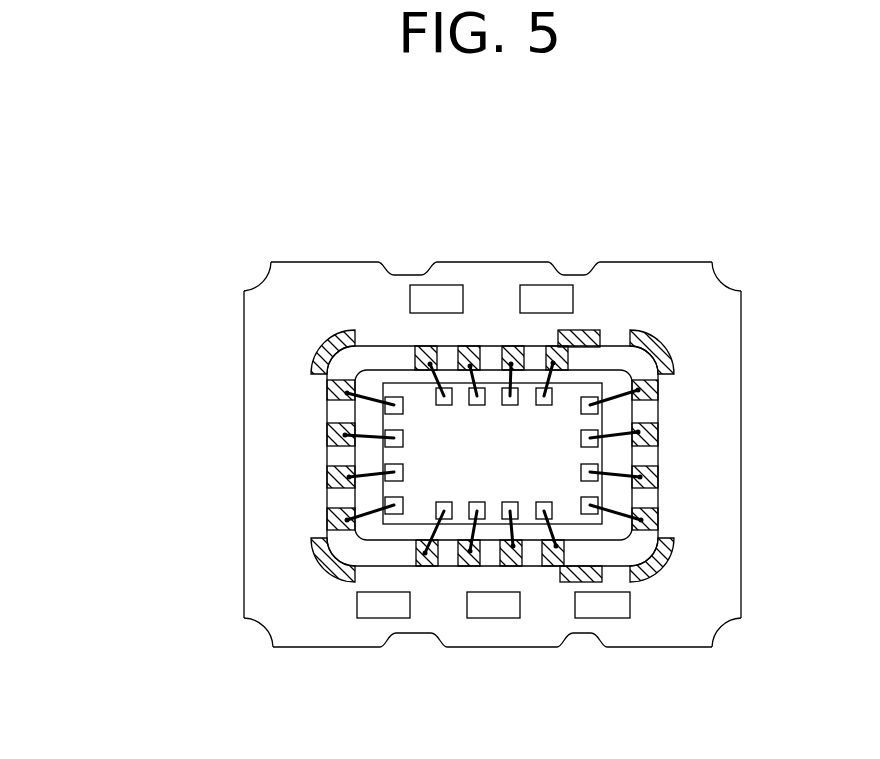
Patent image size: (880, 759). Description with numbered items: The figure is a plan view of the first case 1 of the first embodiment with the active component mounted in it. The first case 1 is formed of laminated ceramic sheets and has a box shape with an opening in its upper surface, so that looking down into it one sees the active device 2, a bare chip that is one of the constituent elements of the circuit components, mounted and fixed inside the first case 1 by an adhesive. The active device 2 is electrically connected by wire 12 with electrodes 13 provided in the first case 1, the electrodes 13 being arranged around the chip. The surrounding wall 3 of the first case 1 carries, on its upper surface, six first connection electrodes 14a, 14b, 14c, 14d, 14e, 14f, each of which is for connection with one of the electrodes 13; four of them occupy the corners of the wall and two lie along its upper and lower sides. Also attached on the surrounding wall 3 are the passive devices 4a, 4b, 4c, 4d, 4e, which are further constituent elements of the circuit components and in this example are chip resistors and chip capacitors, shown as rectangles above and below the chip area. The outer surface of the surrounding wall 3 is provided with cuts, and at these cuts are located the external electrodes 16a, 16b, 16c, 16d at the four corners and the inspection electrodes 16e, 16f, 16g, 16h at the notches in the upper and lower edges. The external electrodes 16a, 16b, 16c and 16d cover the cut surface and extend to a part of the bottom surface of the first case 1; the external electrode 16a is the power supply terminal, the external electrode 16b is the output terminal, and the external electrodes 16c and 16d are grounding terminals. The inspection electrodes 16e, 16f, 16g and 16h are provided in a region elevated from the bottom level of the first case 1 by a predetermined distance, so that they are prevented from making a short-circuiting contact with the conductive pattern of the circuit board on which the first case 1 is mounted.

The first case 1 is at (508, 459).
The active device 2 is at (440, 380).
The surrounding wall 3 is at (723, 487).
The passive device 4a is at (610, 608).
The passive device 4b is at (502, 608).
The passive device 4c is at (373, 608).
The passive device 4d is at (532, 296).
The passive device 4e is at (441, 292).
The wire 12 is at (376, 392).
The electrodes 13 is at (335, 431).
The first connection electrode 14a is at (672, 558).
The first connection electrode 14b is at (673, 355).
The first connection electrode 14c is at (313, 560).
The first connection electrode 14d is at (335, 332).
The first connection electrode 14e is at (578, 578).
The first connection electrode 14f is at (583, 335).
The external electrode 16a is at (722, 632).
The external electrode 16b is at (723, 272).
The external electrode 16c is at (257, 628).
The external electrode 16d is at (244, 270).
The inspection electrode 16e is at (575, 632).
The inspection electrode 16f is at (417, 633).
The inspection electrode 16g is at (572, 272).
The inspection electrode 16h is at (418, 268).